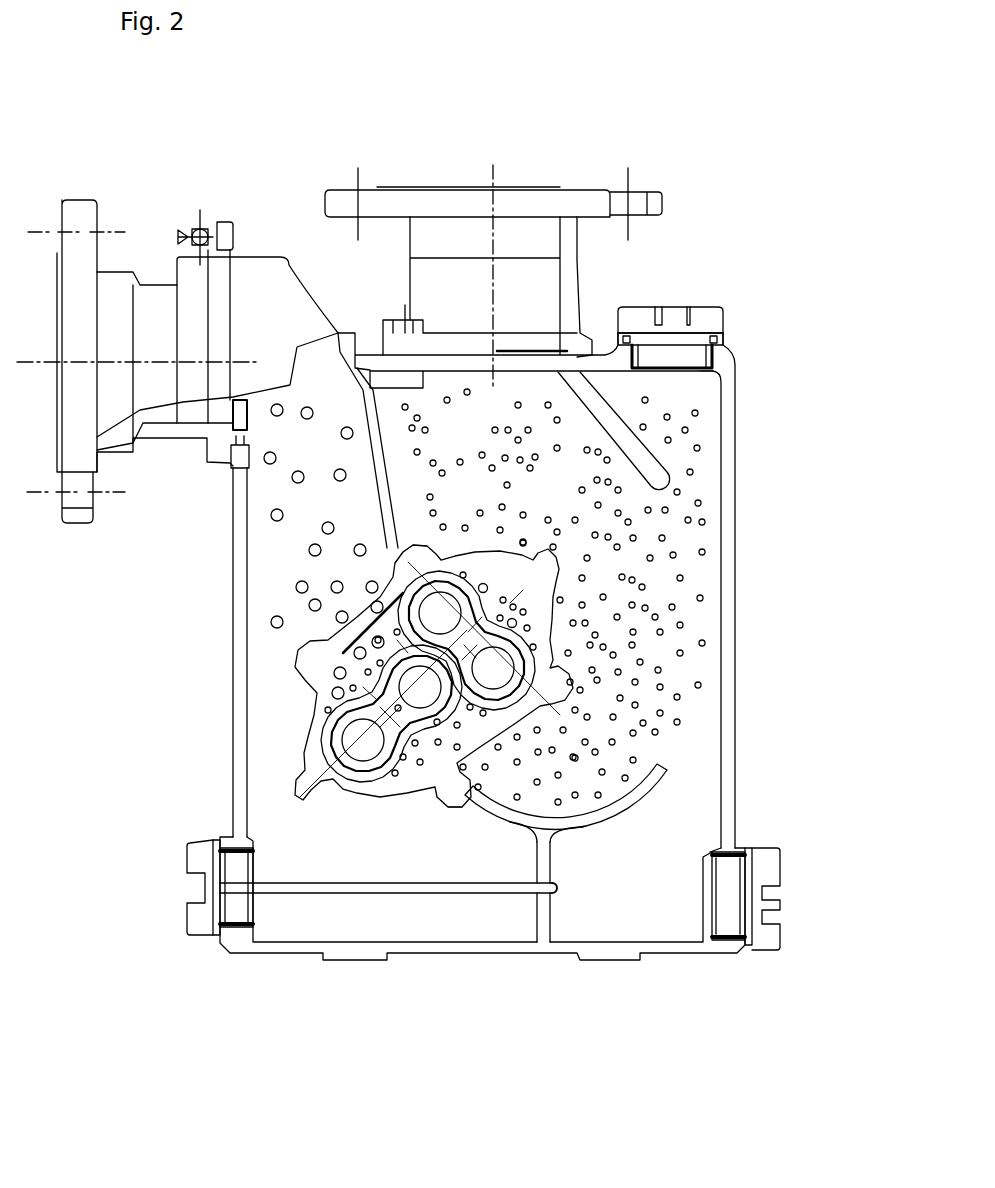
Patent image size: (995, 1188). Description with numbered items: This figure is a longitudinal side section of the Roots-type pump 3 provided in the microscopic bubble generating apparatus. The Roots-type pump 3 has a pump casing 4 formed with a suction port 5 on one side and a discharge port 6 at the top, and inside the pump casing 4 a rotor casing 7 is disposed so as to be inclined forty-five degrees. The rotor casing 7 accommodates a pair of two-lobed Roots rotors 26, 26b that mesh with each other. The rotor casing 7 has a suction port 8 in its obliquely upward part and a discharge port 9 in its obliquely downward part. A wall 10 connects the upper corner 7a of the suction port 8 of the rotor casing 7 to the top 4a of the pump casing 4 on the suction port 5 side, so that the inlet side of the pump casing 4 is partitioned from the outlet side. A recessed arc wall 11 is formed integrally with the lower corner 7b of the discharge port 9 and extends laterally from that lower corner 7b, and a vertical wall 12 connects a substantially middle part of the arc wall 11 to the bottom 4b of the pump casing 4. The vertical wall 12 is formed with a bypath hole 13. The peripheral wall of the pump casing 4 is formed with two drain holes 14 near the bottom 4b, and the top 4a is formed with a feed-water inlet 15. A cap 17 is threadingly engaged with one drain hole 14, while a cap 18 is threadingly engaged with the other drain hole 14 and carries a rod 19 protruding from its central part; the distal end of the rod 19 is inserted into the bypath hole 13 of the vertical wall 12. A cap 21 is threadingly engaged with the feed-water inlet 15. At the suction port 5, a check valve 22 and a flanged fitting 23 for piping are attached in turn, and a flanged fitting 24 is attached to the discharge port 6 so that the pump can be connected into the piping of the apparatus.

The Roots-type pump 3 is at (147, 210).
The pump casing 4 is at (730, 377).
The top of the pump casing 4a is at (380, 363).
The bottom of the pump casing 4b is at (497, 948).
The suction port 5 is at (237, 447).
The discharge port 6 is at (538, 377).
The rotor casing 7 is at (497, 552).
The upper corner of the suction port of the rotor casing 7a is at (440, 545).
The lower corner of the discharge port of the rotor casing 7b is at (445, 790).
The suction port of the rotor casing 8 is at (338, 652).
The discharge port of the rotor casing 9 is at (466, 772).
The wall 10 is at (380, 455).
The recessed arc wall 11 is at (635, 800).
The vertical wall 12 is at (547, 910).
The bypath hole 13 is at (553, 894).
The drain hole 14 is at (255, 912).
The feed-water inlet 15 is at (687, 372).
The cap 17 is at (772, 865).
The cap 18 is at (199, 930).
The rod 19 is at (452, 890).
The cap 21 is at (707, 310).
The check valve 22 is at (233, 405).
The flanged fitting 23 is at (67, 515).
The flanged fitting 24 is at (585, 193).
The two-lobed Roots rotor 26 is at (520, 641).
The rotor shaft bore 26b is at (505, 660).